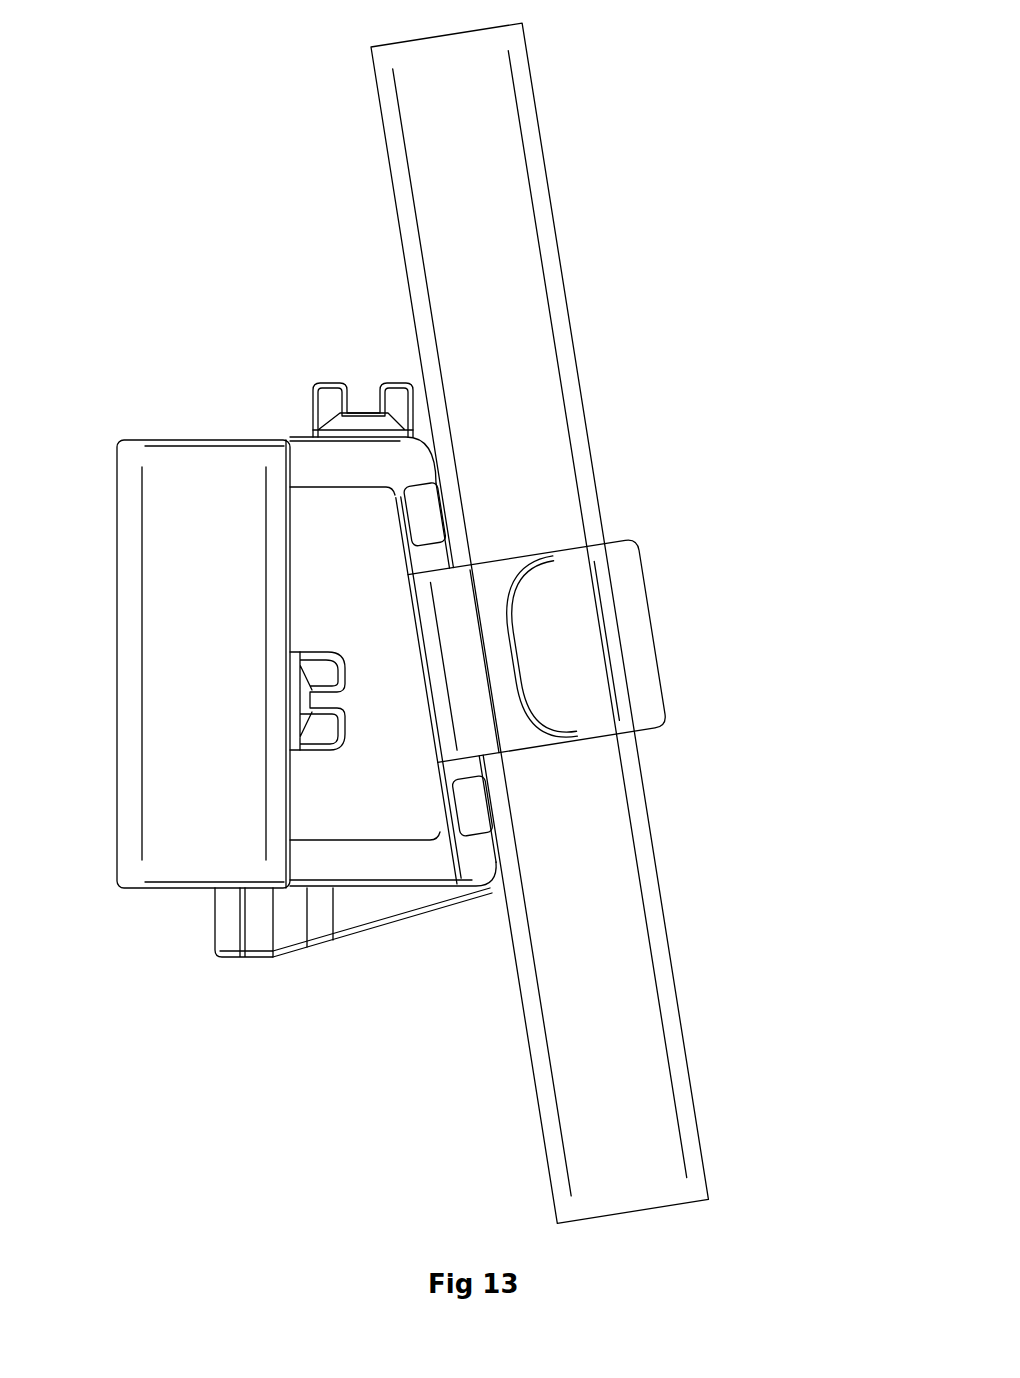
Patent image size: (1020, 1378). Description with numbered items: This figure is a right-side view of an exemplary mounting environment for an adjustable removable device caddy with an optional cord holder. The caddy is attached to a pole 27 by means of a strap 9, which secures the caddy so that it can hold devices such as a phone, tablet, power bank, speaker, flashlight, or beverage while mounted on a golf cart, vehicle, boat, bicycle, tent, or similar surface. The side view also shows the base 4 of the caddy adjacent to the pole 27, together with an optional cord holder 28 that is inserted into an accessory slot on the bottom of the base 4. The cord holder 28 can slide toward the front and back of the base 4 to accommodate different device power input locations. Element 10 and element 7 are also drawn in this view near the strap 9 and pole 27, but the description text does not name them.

The pole 27 is at (539, 623).
The upper hook 10 is at (573, 445).
The strap 9 is at (581, 633).
The lower hook 7 is at (598, 776).
The base 4 is at (384, 730).
The cord holder 28 is at (198, 941).